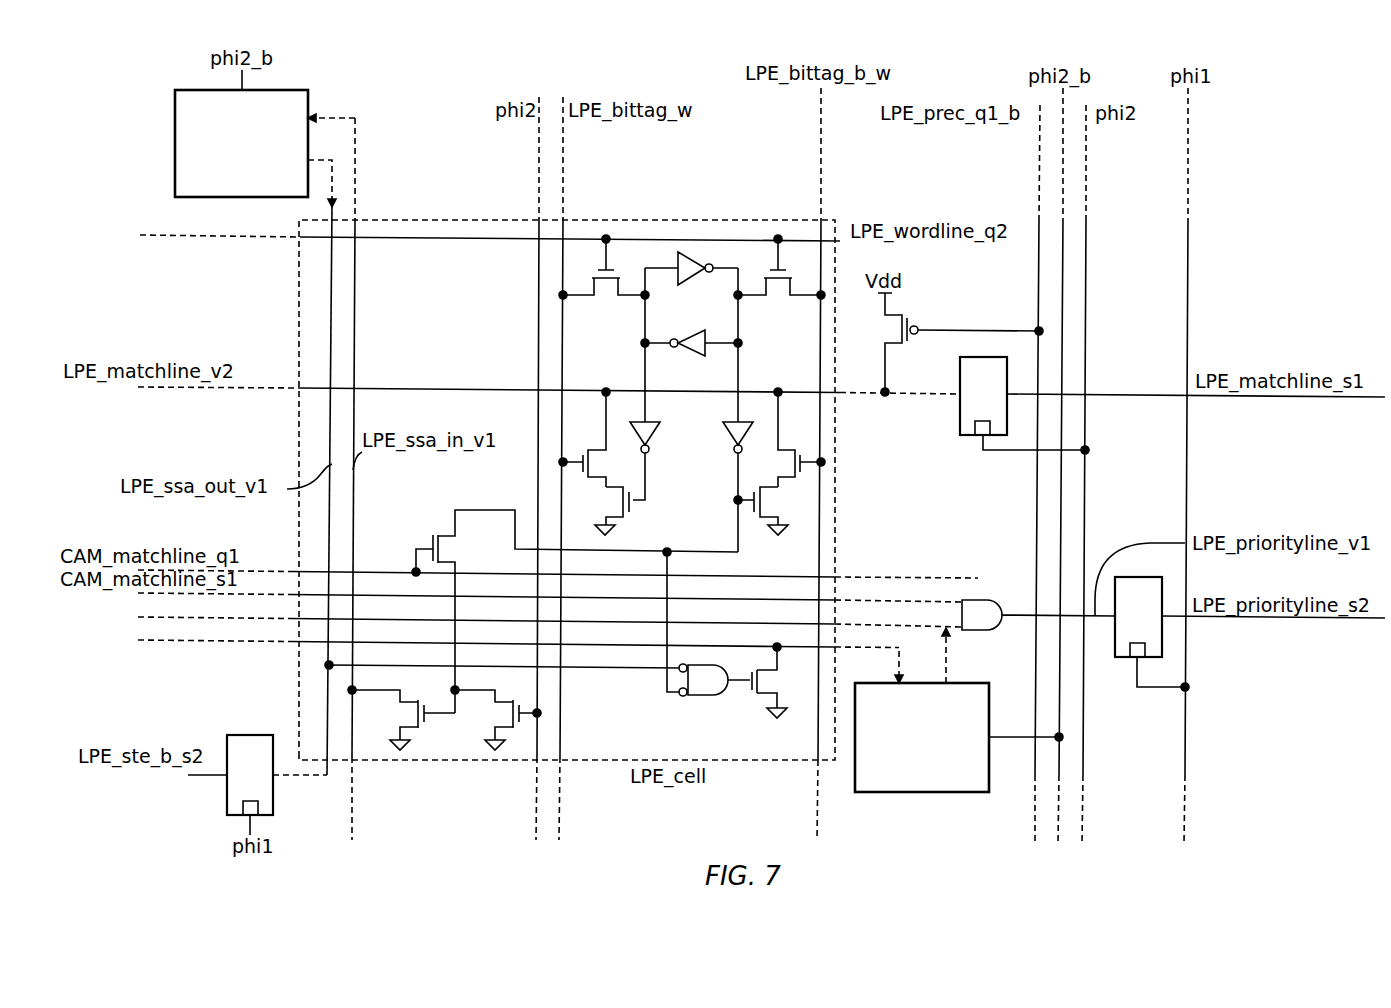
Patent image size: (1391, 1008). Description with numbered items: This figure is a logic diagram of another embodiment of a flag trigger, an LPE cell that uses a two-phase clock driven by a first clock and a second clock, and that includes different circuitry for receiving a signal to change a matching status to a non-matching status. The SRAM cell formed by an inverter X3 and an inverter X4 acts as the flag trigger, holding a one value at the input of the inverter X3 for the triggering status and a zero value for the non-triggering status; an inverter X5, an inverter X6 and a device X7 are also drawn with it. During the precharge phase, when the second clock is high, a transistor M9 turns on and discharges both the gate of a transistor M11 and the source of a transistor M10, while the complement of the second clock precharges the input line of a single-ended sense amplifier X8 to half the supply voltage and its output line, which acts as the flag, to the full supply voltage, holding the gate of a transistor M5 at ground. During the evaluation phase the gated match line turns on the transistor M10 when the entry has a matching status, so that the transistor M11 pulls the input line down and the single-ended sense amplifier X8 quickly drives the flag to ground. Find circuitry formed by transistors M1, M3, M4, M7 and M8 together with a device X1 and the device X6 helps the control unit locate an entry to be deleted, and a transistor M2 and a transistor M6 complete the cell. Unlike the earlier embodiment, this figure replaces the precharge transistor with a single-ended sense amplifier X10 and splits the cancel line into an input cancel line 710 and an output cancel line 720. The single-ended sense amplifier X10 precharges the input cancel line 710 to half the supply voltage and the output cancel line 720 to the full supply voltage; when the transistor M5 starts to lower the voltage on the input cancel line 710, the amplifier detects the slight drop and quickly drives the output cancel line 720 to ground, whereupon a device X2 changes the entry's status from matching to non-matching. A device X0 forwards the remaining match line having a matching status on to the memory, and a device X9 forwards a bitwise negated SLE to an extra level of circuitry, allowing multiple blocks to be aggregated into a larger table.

The output cancel line 720 is at (238, 618).
The input cancel line 710 is at (238, 641).
The transistor M1 is at (947, 344).
The transistor M2 is at (781, 278).
The transistor M3 is at (784, 439).
The transistor M4 is at (771, 511).
The transistor M5 is at (780, 680).
The transistor M6 is at (602, 278).
The transistor M7 is at (597, 439).
The transistor M8 is at (600, 511).
The transistor M9 is at (498, 720).
The transistor M10 is at (575, 611).
The transistor M11 is at (403, 720).
The device X0 is at (1250, 634).
The device X1 is at (1024, 405).
The device X2 is at (1038, 615).
The inverter X3 is at (691, 280).
The inverter X4 is at (691, 358).
The inverter X5 is at (731, 473).
The device X6 is at (651, 447).
The device X7 is at (714, 680).
The single-ended sense amplifier X8 is at (241, 156).
The device X9 is at (257, 785).
The single-ended sense amplifier X10 is at (959, 750).